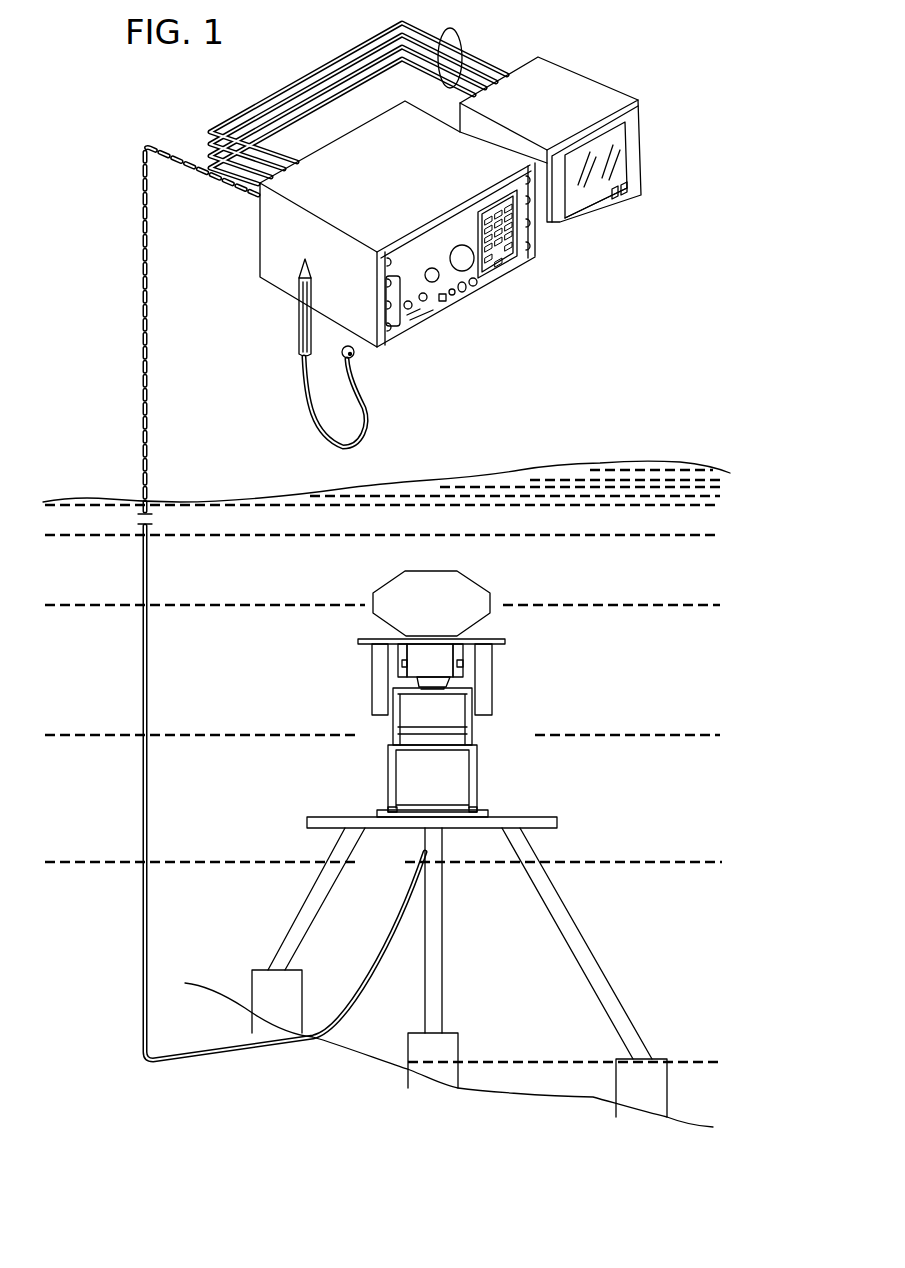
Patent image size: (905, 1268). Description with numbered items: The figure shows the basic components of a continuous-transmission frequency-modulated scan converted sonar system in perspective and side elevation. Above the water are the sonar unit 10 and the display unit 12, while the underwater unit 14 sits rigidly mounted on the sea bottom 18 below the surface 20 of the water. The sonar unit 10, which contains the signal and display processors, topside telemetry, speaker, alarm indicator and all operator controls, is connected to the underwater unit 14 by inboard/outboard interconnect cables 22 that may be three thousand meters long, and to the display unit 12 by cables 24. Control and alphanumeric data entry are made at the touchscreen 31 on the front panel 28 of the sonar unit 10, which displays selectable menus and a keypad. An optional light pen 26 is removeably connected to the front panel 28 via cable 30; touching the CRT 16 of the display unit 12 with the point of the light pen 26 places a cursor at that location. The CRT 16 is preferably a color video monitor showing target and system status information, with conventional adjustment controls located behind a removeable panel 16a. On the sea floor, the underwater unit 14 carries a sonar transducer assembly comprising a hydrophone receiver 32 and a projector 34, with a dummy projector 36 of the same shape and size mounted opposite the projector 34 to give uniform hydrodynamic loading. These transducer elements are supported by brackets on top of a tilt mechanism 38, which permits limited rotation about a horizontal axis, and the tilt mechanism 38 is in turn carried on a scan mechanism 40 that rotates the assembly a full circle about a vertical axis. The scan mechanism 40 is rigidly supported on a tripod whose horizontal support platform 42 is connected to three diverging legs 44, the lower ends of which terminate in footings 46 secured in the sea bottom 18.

The sonar unit 10 is at (256, 253).
The display unit 12 is at (590, 65).
The underwater unit 14 is at (502, 799).
The CRT 16 is at (625, 162).
The removeable panel 16a is at (605, 208).
The sea bottom 18 is at (510, 1092).
The surface of the water 20 is at (230, 502).
The inboard/outboard interconnect cables 22 is at (150, 365).
The cables 24 is at (457, 36).
The light pen 26 is at (298, 326).
The front panel 28 is at (425, 242).
The cable 30 is at (360, 392).
The touchscreen 31 is at (515, 265).
The hydrophone receiver 32 is at (462, 578).
The projector 34 is at (492, 680).
The dummy projector 36 is at (372, 676).
The tilt mechanism 38 is at (460, 661).
The scan mechanism 40 is at (472, 735).
The horizontal support platform 42 is at (557, 824).
The legs 44 is at (345, 873).
The footings 46 is at (303, 988).